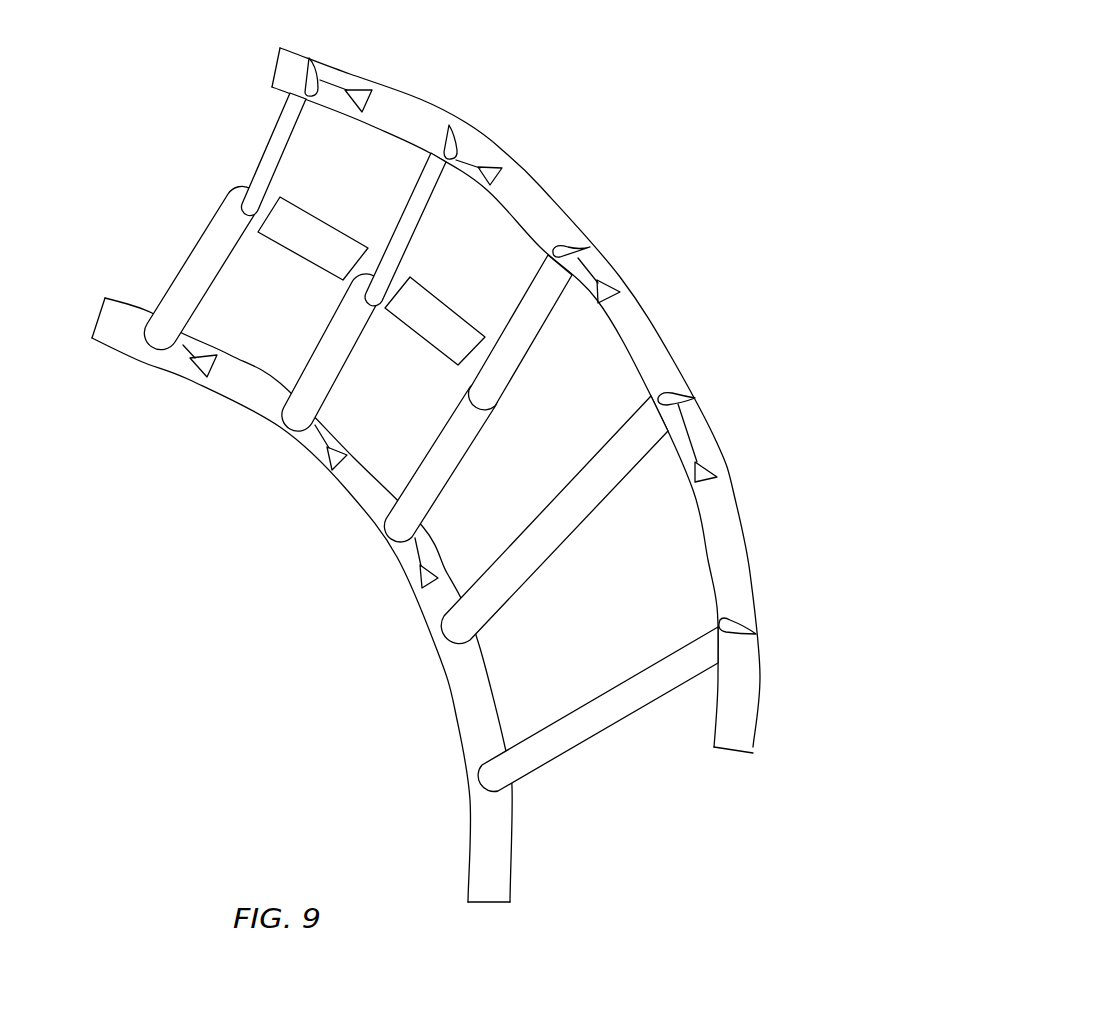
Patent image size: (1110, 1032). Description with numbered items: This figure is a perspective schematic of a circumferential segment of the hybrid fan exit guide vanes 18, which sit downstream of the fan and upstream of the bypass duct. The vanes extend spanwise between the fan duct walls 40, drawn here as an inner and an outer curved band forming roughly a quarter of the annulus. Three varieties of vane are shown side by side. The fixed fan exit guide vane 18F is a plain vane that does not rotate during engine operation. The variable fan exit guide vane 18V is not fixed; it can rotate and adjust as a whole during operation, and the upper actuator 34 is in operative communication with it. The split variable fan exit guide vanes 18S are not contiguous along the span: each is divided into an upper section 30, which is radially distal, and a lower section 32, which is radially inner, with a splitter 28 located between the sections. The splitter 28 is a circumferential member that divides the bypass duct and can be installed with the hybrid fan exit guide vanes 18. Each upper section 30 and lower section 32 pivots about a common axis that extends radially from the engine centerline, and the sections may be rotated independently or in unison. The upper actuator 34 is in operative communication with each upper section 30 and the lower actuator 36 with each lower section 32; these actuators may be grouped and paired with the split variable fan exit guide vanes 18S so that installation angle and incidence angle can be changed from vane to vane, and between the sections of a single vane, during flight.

The hybrid fan exit guide vanes 18 is at (157, 168).
The split variable fan exit guide vane 18S is at (320, 66).
The variable fan exit guide vane 18V is at (572, 512).
The fixed fan exit guide vane 18F is at (595, 722).
The splitter 28 is at (318, 232).
The upper section 30 is at (265, 152).
The lower section 32 is at (203, 262).
The upper actuator 34 is at (355, 88).
The lower actuator 36 is at (200, 370).
The fan duct walls 40 is at (740, 740).